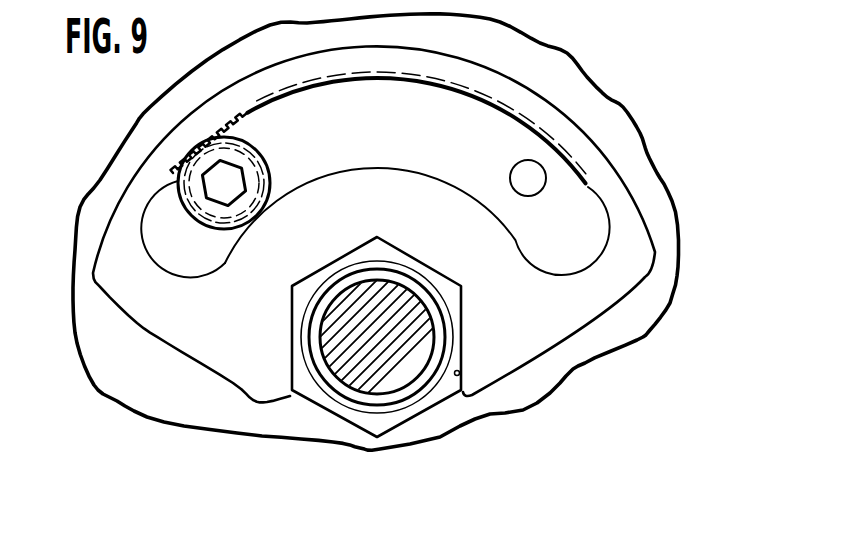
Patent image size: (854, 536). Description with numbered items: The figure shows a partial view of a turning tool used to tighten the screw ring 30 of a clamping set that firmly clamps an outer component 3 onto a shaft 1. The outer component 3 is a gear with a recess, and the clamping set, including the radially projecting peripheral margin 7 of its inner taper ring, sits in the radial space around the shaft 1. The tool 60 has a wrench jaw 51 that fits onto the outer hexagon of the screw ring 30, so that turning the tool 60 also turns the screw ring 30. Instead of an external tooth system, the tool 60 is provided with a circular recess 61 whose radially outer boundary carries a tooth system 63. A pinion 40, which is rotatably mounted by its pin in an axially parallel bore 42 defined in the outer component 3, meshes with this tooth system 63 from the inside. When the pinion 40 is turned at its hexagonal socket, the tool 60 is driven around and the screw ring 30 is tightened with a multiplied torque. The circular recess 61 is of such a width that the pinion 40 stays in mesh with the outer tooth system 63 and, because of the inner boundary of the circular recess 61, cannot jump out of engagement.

The shaft 1 is at (323, 344).
The outer component 3 is at (583, 74).
The peripheral margin 7 is at (412, 282).
The screw ring 30 is at (305, 291).
The pinion 40 is at (278, 174).
The bore 42 is at (534, 190).
The wrench jaw 51 is at (462, 371).
The tool 60 is at (658, 256).
The circular recess 61 is at (378, 83).
The tooth system 63 is at (463, 95).